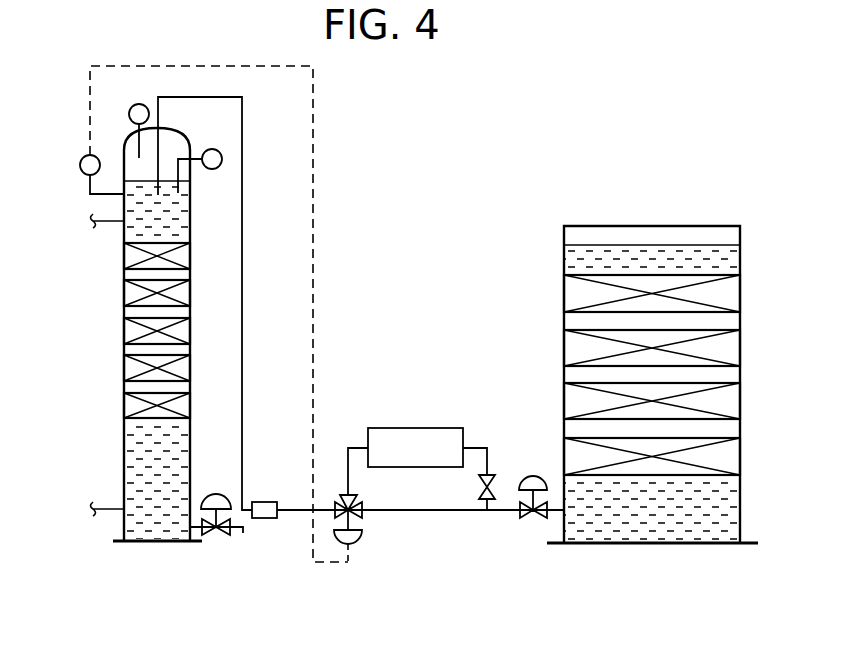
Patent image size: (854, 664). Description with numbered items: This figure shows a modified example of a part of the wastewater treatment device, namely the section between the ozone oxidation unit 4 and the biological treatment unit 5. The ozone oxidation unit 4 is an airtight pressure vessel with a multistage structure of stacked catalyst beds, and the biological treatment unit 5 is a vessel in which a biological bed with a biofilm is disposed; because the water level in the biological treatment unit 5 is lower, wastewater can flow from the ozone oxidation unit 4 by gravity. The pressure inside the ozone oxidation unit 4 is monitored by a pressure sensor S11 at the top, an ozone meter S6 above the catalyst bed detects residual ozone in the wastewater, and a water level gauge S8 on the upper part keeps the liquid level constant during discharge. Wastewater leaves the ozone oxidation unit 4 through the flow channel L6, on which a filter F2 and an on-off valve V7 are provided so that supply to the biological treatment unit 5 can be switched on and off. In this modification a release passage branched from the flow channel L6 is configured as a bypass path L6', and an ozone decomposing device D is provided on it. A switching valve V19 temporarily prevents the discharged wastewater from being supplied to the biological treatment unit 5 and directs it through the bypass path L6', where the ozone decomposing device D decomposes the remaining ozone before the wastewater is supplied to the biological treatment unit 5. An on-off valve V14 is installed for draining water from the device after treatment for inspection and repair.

The ozone oxidation unit 4 is at (115, 289).
The biological treatment unit 5 is at (652, 213).
The pressure sensor S11 is at (139, 104).
The ozone meter S6 is at (84, 157).
The water level gauge S8 is at (212, 149).
The flow channel L6 is at (230, 303).
The bypass path L6' is at (355, 438).
The filter F2 is at (268, 502).
The ozone decomposing device D is at (420, 428).
The on-off valve V14 is at (219, 536).
The switching valve V19 is at (362, 537).
The on-off valve V7 is at (533, 475).